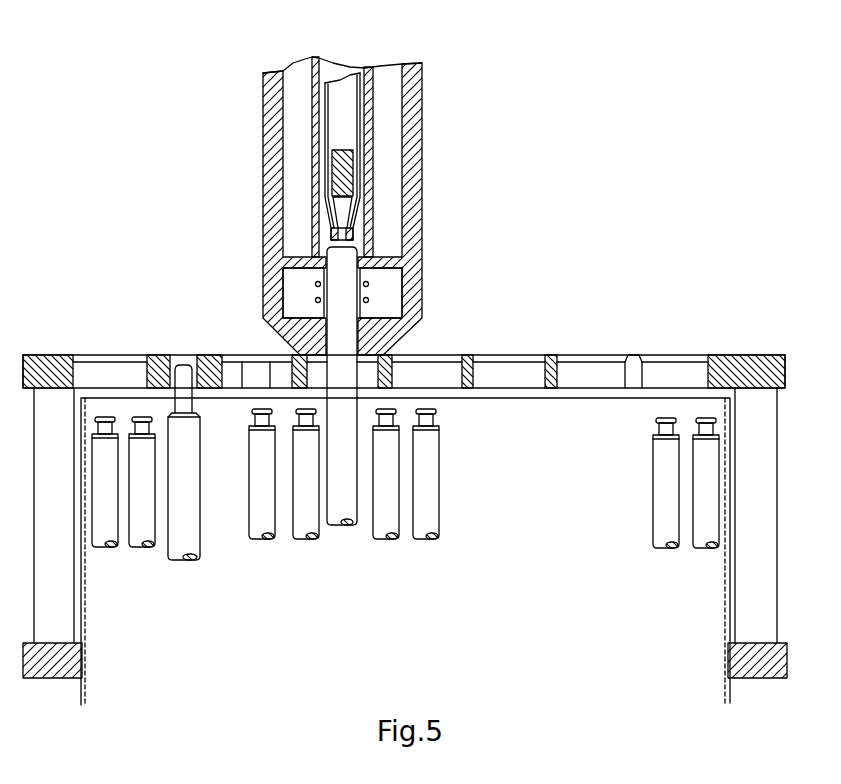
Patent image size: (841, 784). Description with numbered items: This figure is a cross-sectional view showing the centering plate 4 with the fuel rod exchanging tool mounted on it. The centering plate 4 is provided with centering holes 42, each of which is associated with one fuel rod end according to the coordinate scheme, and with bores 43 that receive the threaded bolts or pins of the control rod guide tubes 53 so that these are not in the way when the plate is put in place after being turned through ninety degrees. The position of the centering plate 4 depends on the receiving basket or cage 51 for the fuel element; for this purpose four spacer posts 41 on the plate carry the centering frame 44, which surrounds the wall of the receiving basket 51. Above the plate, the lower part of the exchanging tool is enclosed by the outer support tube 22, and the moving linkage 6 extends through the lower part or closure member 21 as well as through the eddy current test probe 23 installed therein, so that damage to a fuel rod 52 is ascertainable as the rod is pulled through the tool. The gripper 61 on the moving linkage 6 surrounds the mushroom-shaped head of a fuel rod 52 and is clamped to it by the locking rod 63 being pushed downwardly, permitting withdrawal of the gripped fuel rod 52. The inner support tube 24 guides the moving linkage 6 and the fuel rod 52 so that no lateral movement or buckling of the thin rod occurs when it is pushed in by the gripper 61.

The centering plate 4 is at (727, 357).
The moving linkage 6 is at (330, 82).
The lower part 21 is at (414, 296).
The outer support tube 22 is at (412, 155).
The eddy current test probe 23 is at (288, 284).
The inner support tube 24 is at (368, 67).
The spacer posts 41 is at (63, 620).
The centering holes 42 is at (500, 372).
The bores 43 is at (157, 357).
The centering frame 44 is at (55, 667).
The receiving basket 51 is at (85, 600).
The fuel rod 52 is at (117, 545).
The control rod guide tubes 53 is at (198, 484).
The gripper 61 is at (350, 226).
The locking rod 63 is at (348, 170).